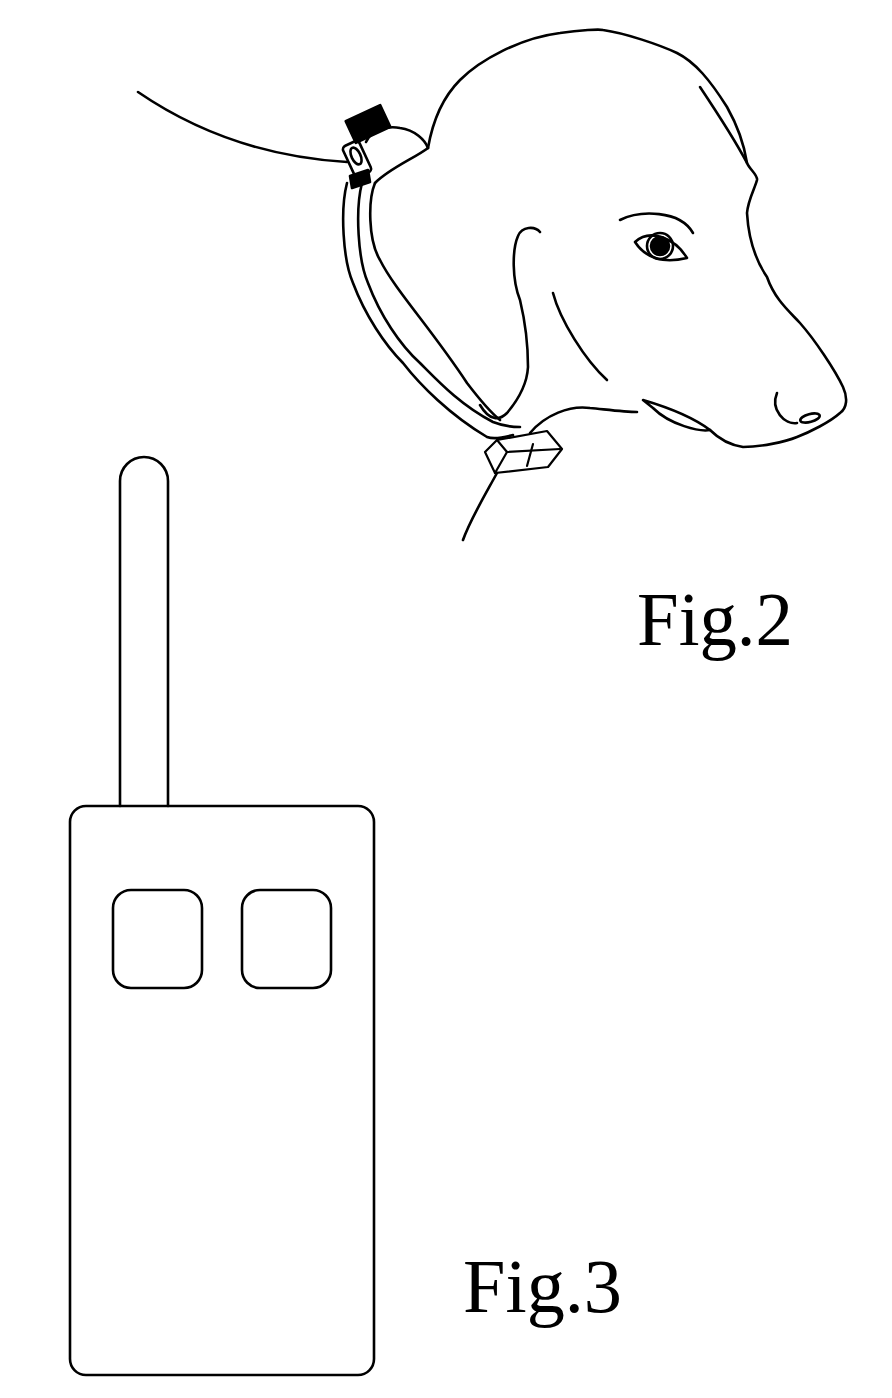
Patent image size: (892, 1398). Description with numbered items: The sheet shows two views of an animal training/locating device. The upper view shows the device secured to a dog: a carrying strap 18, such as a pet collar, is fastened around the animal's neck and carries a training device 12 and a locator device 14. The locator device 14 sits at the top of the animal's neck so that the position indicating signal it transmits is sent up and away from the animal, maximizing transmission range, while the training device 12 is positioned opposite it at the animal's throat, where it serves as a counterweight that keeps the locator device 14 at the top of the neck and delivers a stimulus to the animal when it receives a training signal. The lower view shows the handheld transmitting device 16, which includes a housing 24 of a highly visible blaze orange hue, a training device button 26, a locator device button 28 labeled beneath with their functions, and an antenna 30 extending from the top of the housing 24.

In FIG. 2, the training device 12 is at (527, 447).
In FIG. 2, the locator device 14 is at (400, 145).
In FIG. 3, the transmitting device 16 is at (230, 916).
In FIG. 2, the carrying strap 18 is at (390, 342).
In FIG. 3, the housing 24 is at (340, 1152).
In FIG. 3, the training device button 26 is at (138, 938).
In FIG. 3, the locator device button 28 is at (310, 932).
In FIG. 3, the antenna 30 is at (145, 577).